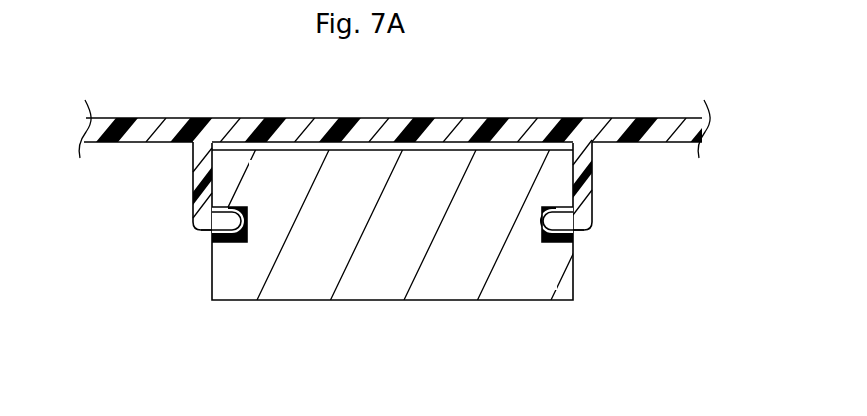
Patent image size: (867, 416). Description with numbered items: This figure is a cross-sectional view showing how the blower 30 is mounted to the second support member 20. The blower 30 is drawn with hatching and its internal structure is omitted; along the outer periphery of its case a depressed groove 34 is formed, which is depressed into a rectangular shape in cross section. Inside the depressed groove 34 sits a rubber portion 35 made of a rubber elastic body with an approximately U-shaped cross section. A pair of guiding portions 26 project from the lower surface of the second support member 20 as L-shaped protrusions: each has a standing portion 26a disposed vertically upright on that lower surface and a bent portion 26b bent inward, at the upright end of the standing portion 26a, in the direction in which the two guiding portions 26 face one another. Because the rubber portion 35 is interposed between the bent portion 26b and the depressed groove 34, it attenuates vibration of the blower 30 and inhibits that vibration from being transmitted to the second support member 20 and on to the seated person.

The second support member 20 is at (698, 267).
The guiding portion 26 is at (395, 199).
The standing portion 26a is at (207, 222).
The bent portion 26b is at (215, 235).
The blower 30 is at (608, 298).
The depressed groove 34 is at (250, 231).
The rubber portion 35 is at (225, 212).